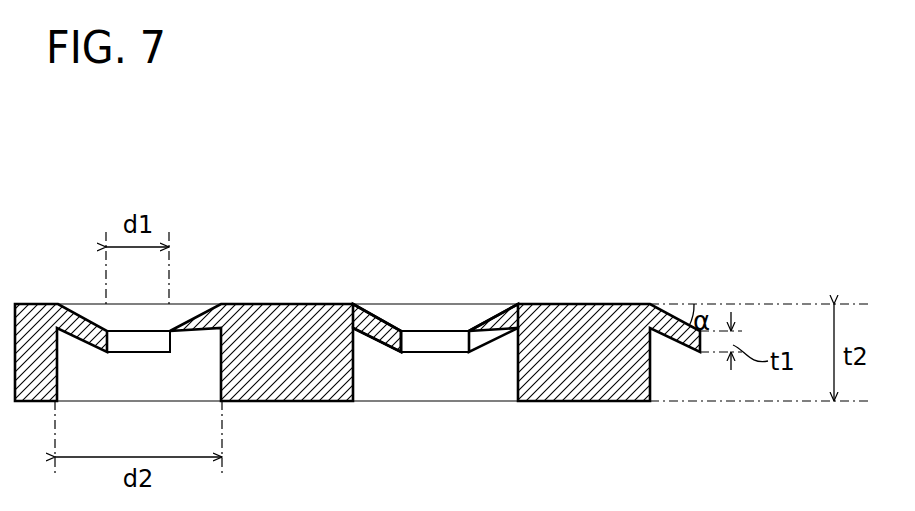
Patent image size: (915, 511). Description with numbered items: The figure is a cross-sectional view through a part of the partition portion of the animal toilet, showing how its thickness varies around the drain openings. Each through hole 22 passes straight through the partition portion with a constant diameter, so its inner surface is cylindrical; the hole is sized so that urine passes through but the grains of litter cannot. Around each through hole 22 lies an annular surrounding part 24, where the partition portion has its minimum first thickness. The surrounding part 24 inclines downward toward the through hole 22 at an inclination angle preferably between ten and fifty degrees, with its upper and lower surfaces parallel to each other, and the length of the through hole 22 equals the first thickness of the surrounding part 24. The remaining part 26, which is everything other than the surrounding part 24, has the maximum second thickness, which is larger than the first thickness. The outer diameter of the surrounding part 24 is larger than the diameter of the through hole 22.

The through hole 22 is at (407, 342).
The surrounding part 24 is at (380, 317).
The remaining part 26 is at (218, 300).